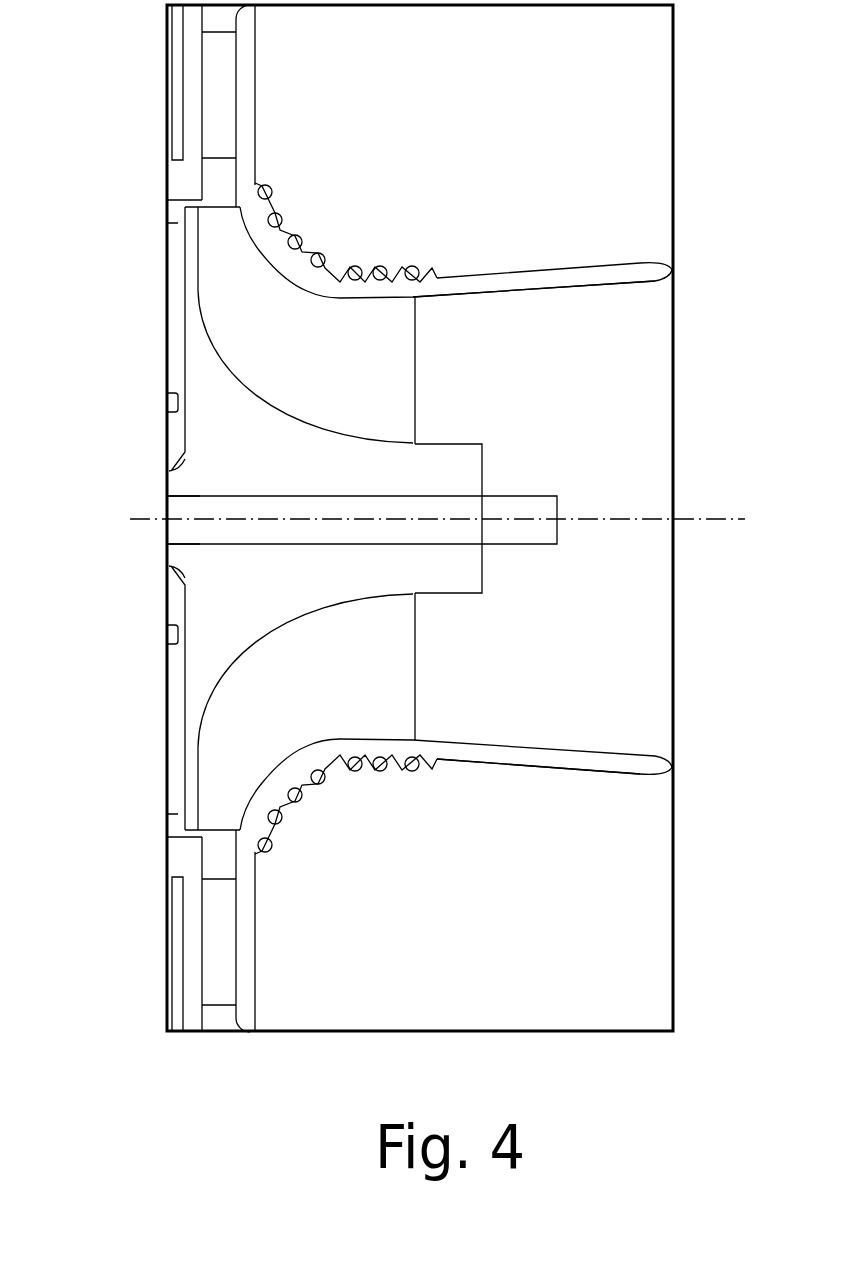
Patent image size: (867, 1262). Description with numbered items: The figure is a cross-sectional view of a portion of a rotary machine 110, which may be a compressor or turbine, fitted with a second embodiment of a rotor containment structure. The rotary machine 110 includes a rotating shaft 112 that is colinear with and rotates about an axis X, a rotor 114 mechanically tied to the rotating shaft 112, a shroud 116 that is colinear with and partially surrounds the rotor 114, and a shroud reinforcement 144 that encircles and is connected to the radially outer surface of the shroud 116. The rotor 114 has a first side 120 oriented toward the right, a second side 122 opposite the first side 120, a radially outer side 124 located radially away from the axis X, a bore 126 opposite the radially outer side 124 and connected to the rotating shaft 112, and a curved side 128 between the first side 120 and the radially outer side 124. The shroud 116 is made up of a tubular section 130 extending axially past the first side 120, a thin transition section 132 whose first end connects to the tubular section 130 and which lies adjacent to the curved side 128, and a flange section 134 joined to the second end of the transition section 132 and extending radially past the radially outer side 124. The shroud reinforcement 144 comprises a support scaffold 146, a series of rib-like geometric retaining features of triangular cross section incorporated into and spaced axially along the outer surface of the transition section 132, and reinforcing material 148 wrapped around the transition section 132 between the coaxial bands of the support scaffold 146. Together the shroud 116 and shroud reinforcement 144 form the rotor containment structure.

The rotary machine 110 is at (420, 518).
The rotating shaft 112 is at (538, 508).
The rotor 114 is at (438, 467).
The shroud 116 is at (540, 283).
The first side 120 is at (415, 340).
The second side 122 is at (184, 343).
The radially outer side 124 is at (215, 205).
The bore 126 is at (192, 497).
The curved side 128 is at (258, 248).
The tubular section 130 is at (495, 285).
The transition section 132 is at (302, 262).
The flange section 134 is at (243, 75).
The shroud reinforcement 144 is at (325, 810).
The support scaffold 146 is at (432, 765).
The reinforcing material 148 is at (412, 775).
The axis X is at (733, 520).